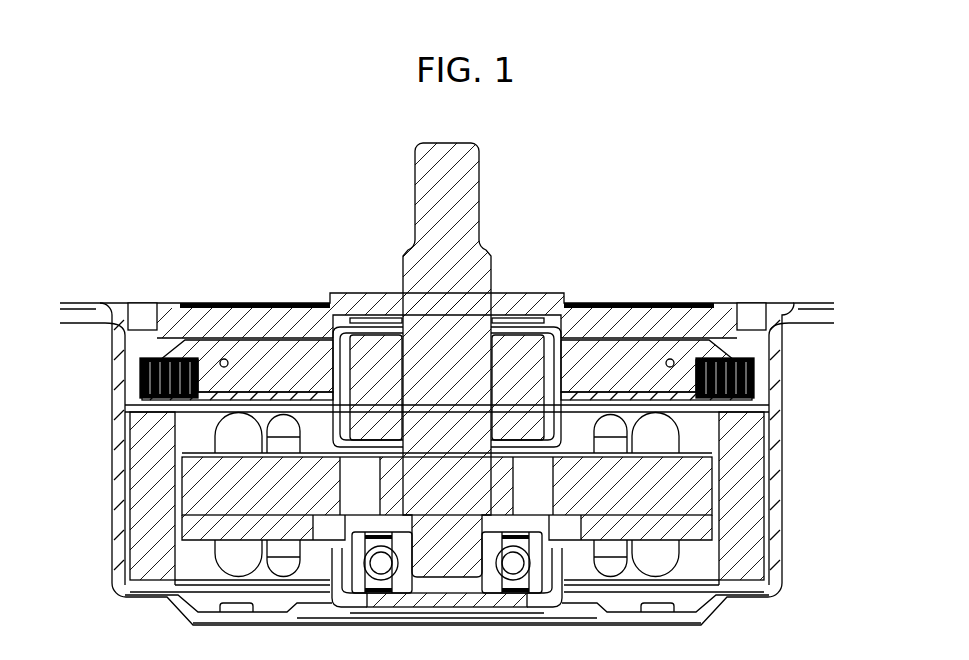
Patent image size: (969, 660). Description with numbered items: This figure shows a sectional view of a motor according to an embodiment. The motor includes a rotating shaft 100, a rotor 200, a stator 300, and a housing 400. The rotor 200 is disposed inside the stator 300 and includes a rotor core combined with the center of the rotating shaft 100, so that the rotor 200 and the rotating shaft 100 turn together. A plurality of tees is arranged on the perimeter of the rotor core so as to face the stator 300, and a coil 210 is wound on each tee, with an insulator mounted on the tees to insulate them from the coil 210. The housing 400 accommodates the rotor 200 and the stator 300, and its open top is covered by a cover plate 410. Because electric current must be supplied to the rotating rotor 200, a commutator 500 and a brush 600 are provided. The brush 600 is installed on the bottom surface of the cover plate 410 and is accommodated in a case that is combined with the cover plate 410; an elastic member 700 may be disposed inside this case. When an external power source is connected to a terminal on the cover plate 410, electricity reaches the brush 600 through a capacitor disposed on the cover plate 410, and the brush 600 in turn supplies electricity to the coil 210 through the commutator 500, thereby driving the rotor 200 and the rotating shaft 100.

The rotating shaft 100 is at (500, 187).
The rotor 200 is at (704, 498).
The coil 210 is at (676, 428).
The stator 300 is at (756, 464).
The housing 400 is at (800, 406).
The cover plate 410 is at (727, 304).
The commutator 500 is at (516, 360).
The brush 600 is at (619, 352).
The elastic member 700 is at (753, 368).